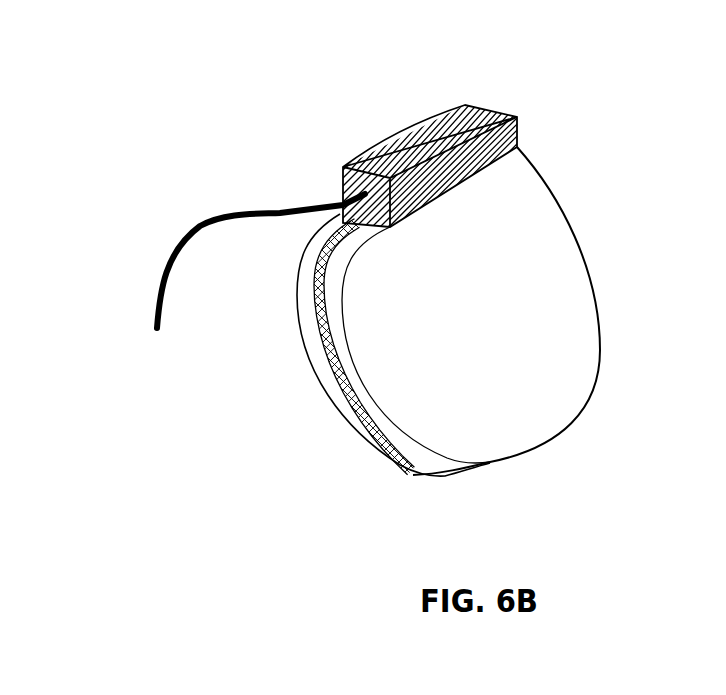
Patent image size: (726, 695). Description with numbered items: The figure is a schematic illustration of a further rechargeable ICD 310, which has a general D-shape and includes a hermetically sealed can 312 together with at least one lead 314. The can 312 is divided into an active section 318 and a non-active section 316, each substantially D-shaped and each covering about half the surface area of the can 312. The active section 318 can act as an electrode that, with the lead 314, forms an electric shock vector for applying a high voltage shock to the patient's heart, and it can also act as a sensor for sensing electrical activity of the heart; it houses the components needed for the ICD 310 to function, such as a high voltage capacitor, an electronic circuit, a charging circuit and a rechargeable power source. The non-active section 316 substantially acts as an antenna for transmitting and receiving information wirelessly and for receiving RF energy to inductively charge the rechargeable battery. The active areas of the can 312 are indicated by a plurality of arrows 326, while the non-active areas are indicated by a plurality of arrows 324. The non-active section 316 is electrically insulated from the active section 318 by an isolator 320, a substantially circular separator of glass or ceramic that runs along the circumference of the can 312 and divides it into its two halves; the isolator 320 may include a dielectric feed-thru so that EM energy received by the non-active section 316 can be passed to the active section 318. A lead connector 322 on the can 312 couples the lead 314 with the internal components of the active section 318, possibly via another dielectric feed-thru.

The rechargeable ICD 310 is at (565, 101).
The can 312 is at (567, 205).
The lead 314 is at (201, 225).
The non-active section 316 is at (570, 352).
The active section 318 is at (307, 312).
The isolator 320 is at (363, 438).
The lead connector 322 is at (388, 148).
The arrows 324 is at (435, 463).
The arrows 326 is at (322, 365).